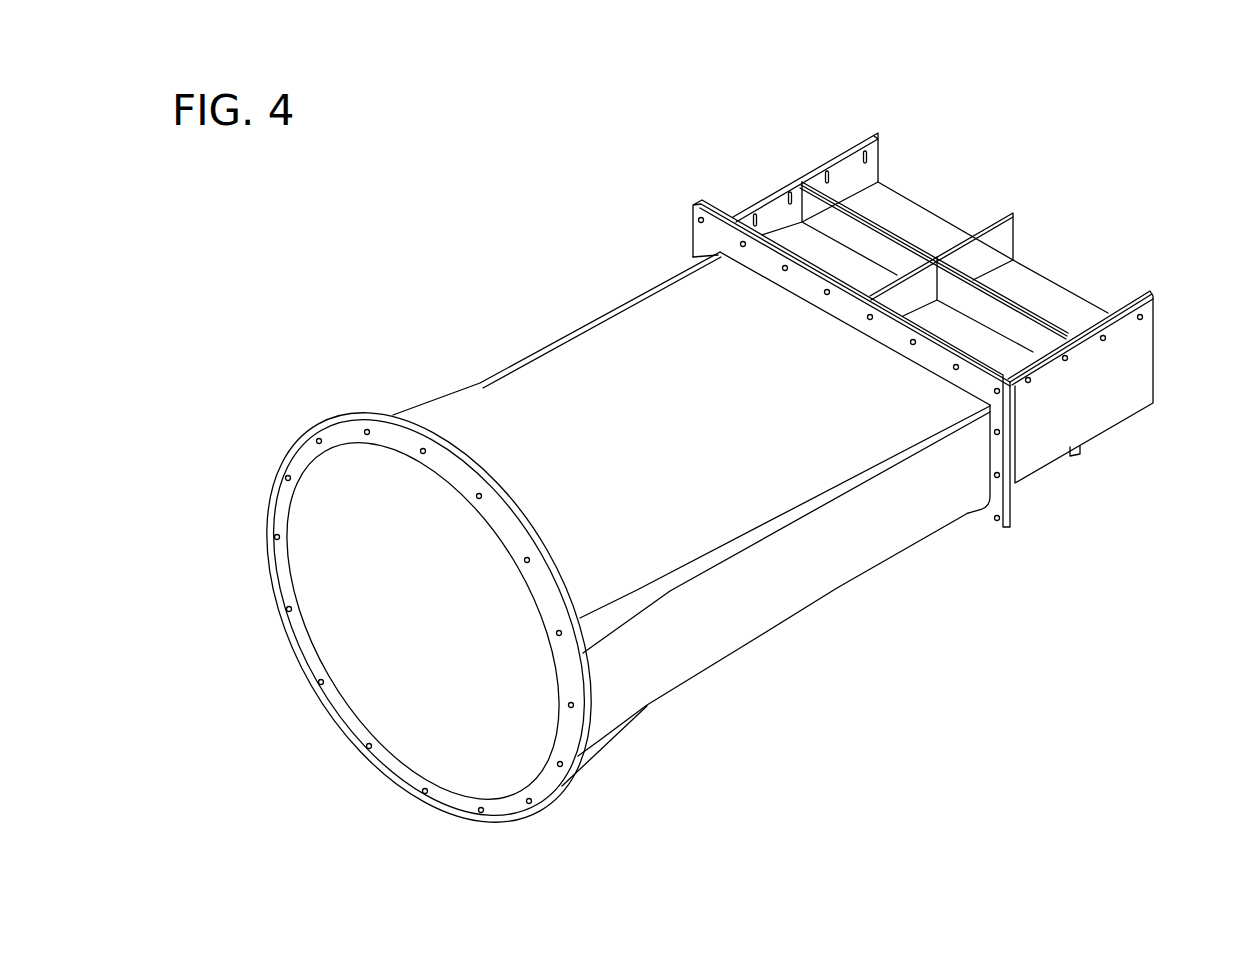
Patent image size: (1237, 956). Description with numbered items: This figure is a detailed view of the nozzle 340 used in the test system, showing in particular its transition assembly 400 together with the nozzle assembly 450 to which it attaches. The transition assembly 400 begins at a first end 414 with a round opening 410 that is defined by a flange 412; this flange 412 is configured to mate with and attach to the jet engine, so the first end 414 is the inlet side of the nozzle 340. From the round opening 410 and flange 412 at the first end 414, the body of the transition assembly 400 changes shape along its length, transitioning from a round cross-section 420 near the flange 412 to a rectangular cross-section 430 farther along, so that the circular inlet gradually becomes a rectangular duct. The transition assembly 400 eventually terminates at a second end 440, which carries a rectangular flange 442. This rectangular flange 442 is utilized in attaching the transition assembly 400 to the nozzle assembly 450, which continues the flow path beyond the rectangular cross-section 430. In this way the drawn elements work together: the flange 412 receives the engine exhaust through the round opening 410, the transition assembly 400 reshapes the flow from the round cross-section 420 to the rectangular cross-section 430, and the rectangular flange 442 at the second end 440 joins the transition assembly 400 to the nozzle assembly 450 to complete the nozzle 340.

The nozzle 340 is at (501, 226).
The transition assembly 400 is at (840, 604).
The round opening 410 is at (319, 491).
The flange 412 is at (558, 791).
The first end 414 is at (324, 704).
The round cross-section 420 is at (646, 708).
The rectangular cross-section 430 is at (915, 527).
The second end 440 is at (1002, 523).
The rectangular flange 442 is at (716, 233).
The nozzle assembly 450 is at (1118, 454).